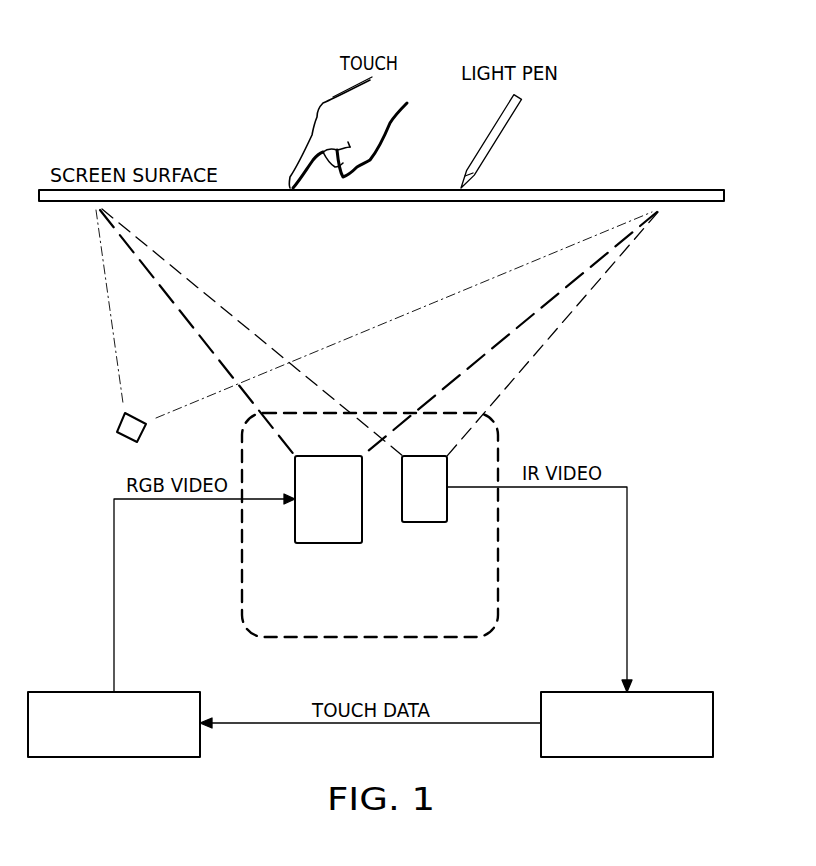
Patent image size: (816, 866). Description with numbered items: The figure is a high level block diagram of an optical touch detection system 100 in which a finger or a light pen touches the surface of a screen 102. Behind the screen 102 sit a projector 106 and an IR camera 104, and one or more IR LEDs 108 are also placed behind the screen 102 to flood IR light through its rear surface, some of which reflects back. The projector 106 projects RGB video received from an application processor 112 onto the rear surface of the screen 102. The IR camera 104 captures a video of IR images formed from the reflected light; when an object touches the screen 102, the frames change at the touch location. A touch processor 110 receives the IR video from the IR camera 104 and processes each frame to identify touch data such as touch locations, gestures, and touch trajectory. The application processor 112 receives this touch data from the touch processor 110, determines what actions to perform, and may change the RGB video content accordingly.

The optical touch detection system 100 is at (203, 67).
The screen 102 is at (573, 189).
The IR camera 104 is at (424, 525).
The projector 106 is at (325, 547).
The IR LED 108 is at (118, 421).
The touch processor 110 is at (637, 758).
The application processor 112 is at (104, 758).